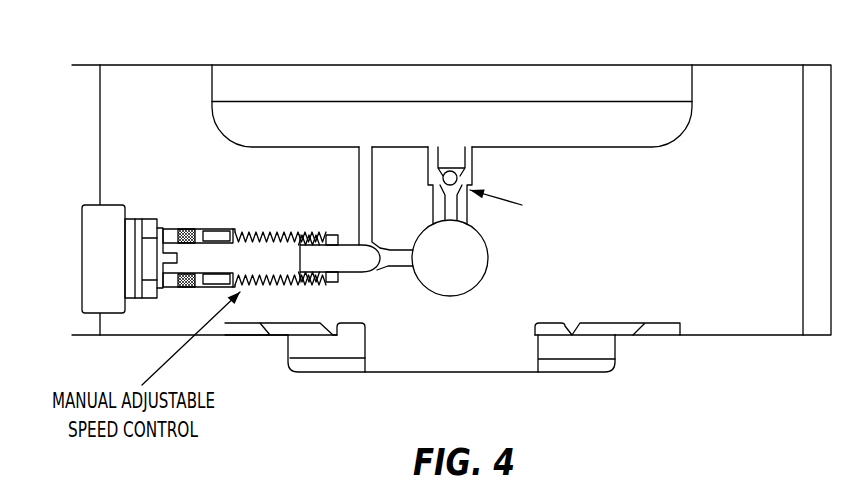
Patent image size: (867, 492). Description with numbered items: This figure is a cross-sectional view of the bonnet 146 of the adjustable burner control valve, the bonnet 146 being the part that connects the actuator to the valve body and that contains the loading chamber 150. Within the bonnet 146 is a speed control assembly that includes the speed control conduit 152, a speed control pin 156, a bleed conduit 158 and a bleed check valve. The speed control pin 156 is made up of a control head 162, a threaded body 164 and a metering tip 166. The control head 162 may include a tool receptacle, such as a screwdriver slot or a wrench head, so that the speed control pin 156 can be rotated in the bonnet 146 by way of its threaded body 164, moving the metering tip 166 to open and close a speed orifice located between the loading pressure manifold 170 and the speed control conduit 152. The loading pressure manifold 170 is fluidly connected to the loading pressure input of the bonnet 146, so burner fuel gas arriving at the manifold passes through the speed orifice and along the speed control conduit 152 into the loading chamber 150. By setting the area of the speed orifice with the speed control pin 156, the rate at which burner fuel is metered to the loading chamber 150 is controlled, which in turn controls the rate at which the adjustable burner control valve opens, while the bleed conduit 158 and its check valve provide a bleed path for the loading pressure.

The bonnet 146 is at (739, 84).
The loading chamber 150 is at (597, 84).
The speed control conduit 152 is at (358, 182).
The speed control pin 156 is at (283, 262).
The bleed conduit 158 is at (474, 160).
The control head 162 is at (133, 215).
The threaded body 164 is at (257, 257).
The metering tip 166 is at (363, 262).
The loading pressure manifold 170 is at (460, 257).